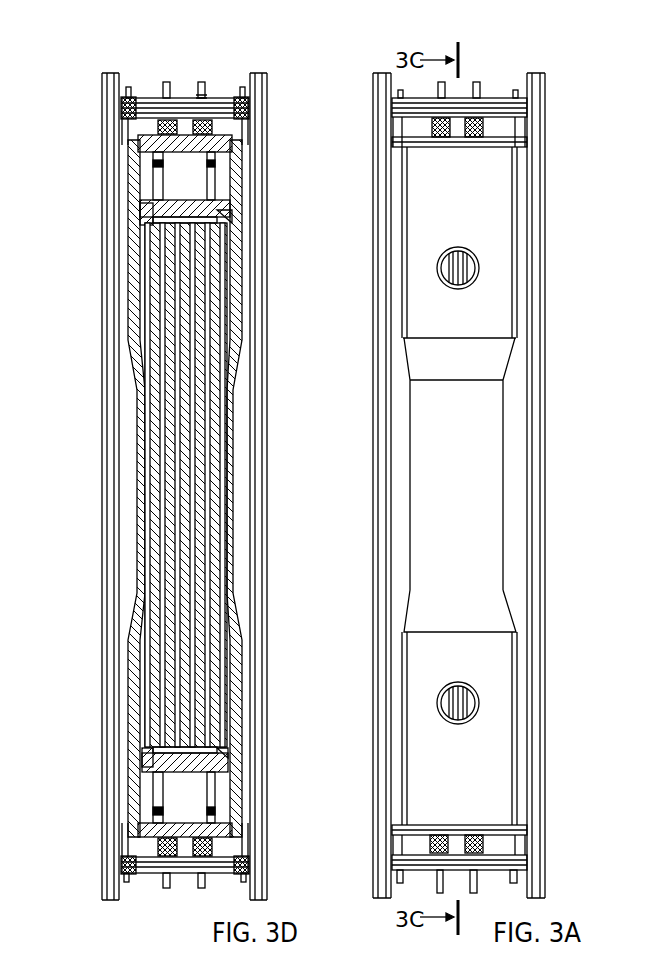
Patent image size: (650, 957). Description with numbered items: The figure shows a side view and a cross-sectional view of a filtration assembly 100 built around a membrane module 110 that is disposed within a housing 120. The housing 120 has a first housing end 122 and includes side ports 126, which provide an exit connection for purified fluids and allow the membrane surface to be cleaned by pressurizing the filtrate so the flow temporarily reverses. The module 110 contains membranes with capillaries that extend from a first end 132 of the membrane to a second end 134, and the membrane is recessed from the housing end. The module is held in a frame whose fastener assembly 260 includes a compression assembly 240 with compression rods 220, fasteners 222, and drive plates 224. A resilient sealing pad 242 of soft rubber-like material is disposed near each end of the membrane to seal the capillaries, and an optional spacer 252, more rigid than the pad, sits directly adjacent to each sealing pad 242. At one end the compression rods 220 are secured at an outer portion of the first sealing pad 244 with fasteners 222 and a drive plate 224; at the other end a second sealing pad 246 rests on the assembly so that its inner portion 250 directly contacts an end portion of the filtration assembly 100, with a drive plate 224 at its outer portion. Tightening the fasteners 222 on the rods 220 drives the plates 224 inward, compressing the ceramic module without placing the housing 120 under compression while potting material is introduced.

In FIG. 3D, the filtration assembly 100 is at (128, 353).
In FIG. 3D, the membrane module 110 is at (215, 308).
In FIG. 3A, the housing 120 is at (495, 222).
In FIG. 3A, the first housing end 122 is at (505, 153).
In FIG. 3A, the side ports 126 is at (497, 817).
In FIG. 3D, the first end of the membrane 132 is at (225, 230).
In FIG. 3D, the second end of the membrane 134 is at (225, 740).
In FIG. 3D, the compression rods 220 is at (203, 86).
In FIG. 3D, the fasteners 222 is at (168, 98).
In FIG. 3D, the drive plate 224 is at (233, 141).
In FIG. 3D, the compression assembly 240 is at (205, 92).
In FIG. 3D, the sealing pad 242 is at (163, 212).
In FIG. 3D, the first sealing pad 244 is at (142, 202).
In FIG. 3D, the second sealing pad 246 is at (140, 768).
In FIG. 3D, the inner portion of the second sealing pad 250 is at (145, 224).
In FIG. 3D, the spacer 252 is at (212, 190).
In FIG. 3D, the fastener assembly 260 is at (208, 96).